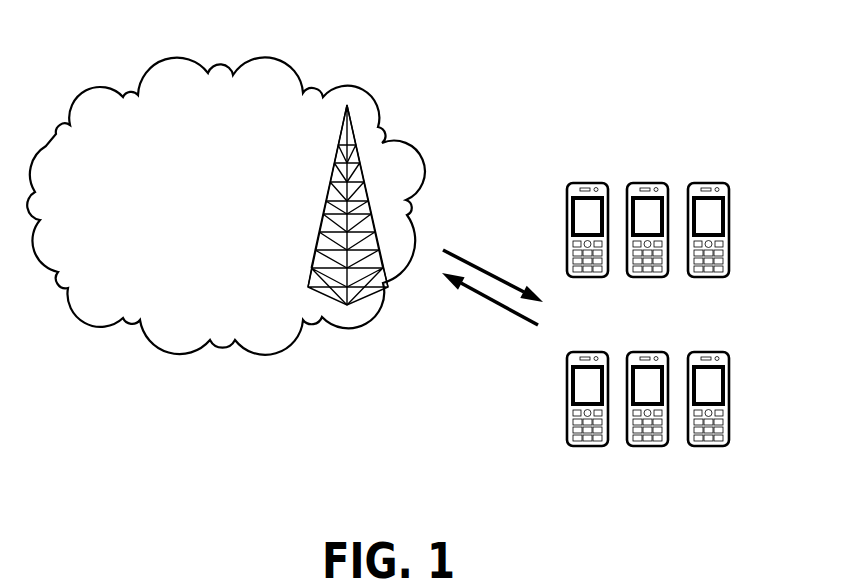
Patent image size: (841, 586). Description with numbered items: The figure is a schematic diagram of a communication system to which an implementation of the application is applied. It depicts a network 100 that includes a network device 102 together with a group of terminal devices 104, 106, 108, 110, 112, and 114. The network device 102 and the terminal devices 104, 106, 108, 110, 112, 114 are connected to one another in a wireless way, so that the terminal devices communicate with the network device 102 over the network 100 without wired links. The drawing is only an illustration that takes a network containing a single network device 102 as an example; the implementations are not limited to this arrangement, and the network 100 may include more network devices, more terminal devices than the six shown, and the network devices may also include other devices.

The network 100 is at (213, 45).
The network device 102 is at (311, 268).
The terminal device 104 is at (587, 183).
The terminal device 106 is at (647, 183).
The terminal device 108 is at (708, 183).
The terminal device 110 is at (587, 446).
The terminal device 112 is at (648, 446).
The terminal device 114 is at (708, 446).